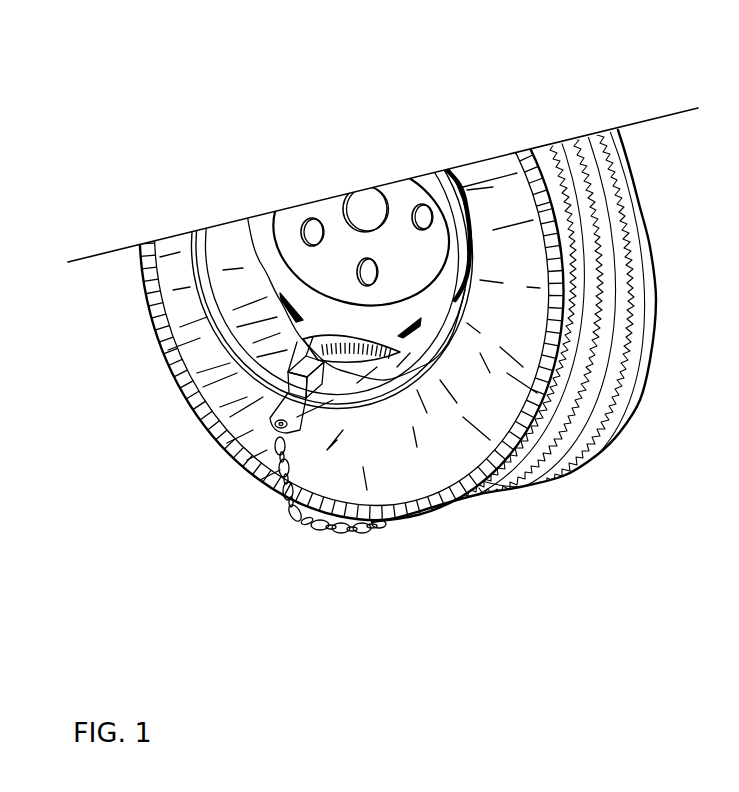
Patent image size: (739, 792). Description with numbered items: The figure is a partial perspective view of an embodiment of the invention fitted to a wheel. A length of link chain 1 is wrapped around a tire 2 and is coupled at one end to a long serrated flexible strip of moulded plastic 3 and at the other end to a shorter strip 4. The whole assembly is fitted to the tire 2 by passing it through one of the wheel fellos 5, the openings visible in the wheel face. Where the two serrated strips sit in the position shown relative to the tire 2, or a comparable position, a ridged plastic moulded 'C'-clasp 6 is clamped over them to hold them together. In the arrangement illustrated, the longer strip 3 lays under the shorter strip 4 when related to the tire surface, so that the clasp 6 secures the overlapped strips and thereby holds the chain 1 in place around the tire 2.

The link chain 1 is at (323, 542).
The tire 2 is at (560, 477).
The long serrated flexible strip of moulded plastic 3 is at (337, 341).
The shorter strip 4 is at (285, 402).
The wheel fellos 5 is at (450, 293).
The ridged plastic moulded 'C'-clasp 6 is at (300, 373).